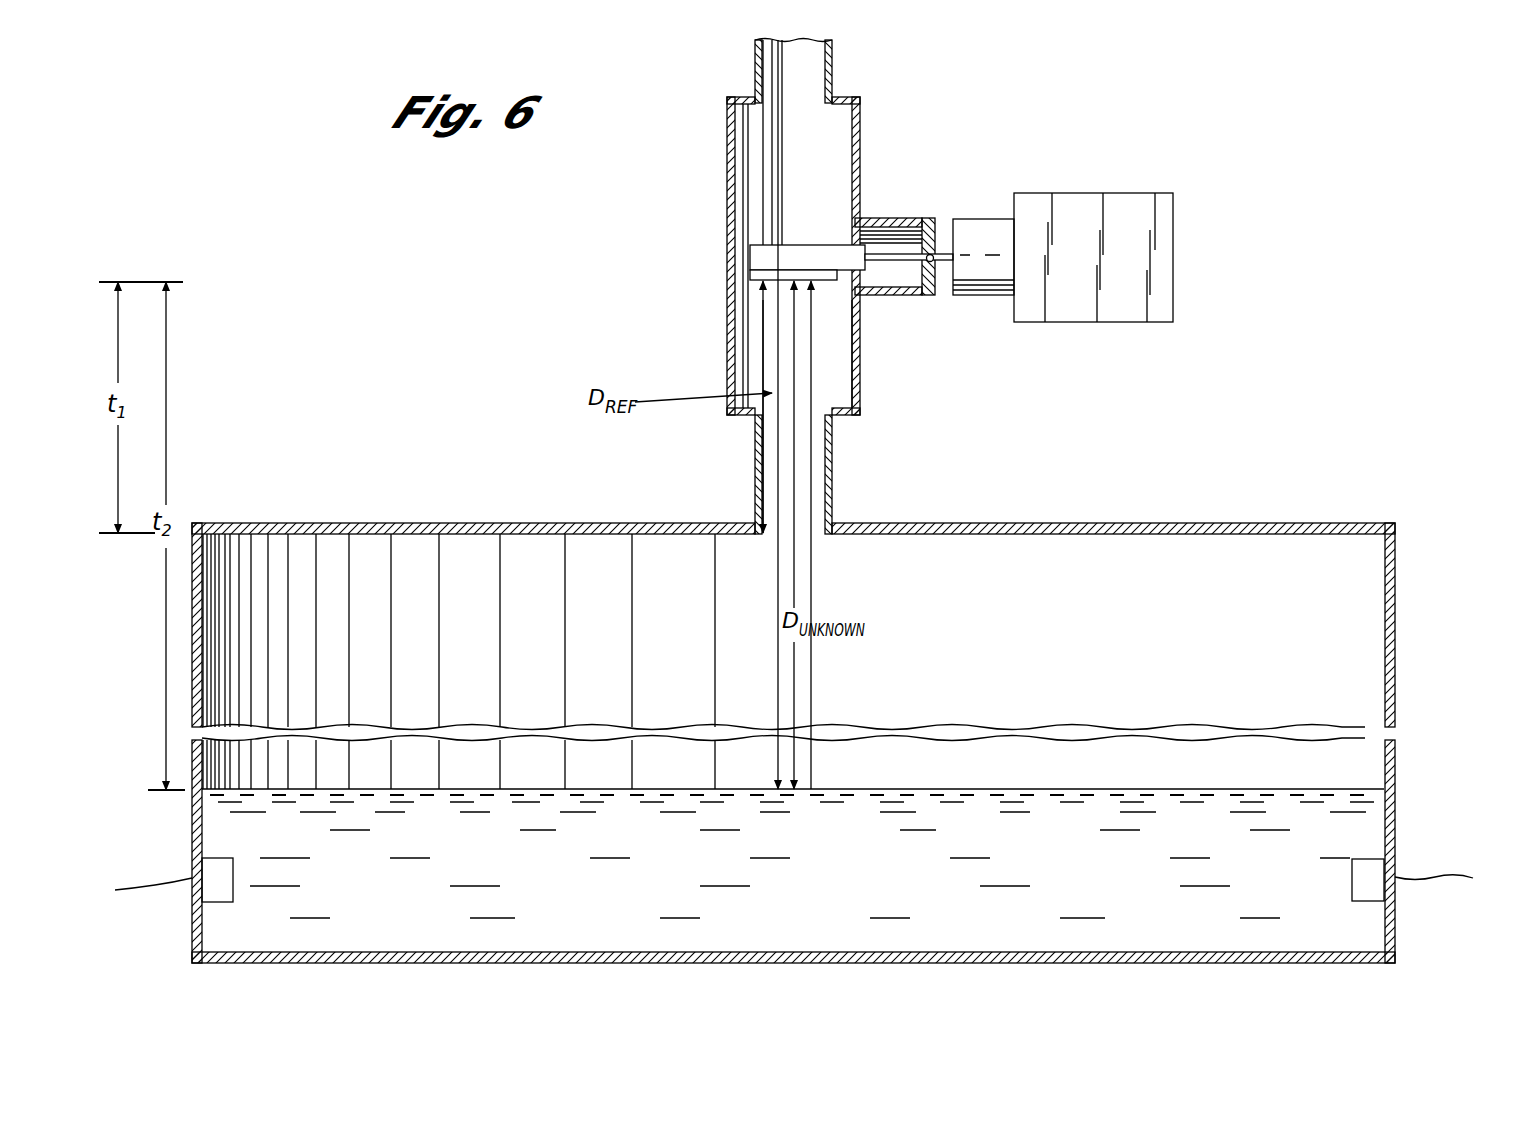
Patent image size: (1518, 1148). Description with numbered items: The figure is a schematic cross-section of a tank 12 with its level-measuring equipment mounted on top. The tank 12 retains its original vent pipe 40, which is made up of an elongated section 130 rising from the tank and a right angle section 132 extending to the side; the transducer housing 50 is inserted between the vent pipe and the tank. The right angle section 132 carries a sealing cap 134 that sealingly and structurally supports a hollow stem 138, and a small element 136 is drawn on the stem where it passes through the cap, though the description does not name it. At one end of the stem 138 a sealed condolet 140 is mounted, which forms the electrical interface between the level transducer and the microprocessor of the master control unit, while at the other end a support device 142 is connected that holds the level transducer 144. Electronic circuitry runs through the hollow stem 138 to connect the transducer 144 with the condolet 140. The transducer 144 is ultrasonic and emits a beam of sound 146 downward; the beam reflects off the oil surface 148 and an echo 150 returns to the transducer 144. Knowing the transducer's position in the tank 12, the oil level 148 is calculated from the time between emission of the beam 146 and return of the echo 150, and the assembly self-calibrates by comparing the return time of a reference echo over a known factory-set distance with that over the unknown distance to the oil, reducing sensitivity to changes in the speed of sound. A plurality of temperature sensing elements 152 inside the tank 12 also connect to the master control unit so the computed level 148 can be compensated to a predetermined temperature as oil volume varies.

The tank 12 is at (1400, 645).
The vent pipe 40 is at (848, 150).
The transducer housing 50 is at (862, 352).
The elongated section 130 is at (753, 450).
The right angle section 132 is at (887, 225).
The sealing cap 134 is at (932, 228).
The pivot 136 is at (932, 263).
The stem 138 is at (897, 262).
The sealed condolet 140 is at (1172, 237).
The support device 142 is at (797, 248).
The level transducer 144 is at (765, 278).
The beam of sound 146 is at (778, 567).
The oil surface 148 is at (955, 789).
The echo 150 is at (805, 675).
The temperature sensing elements 152 is at (225, 890).